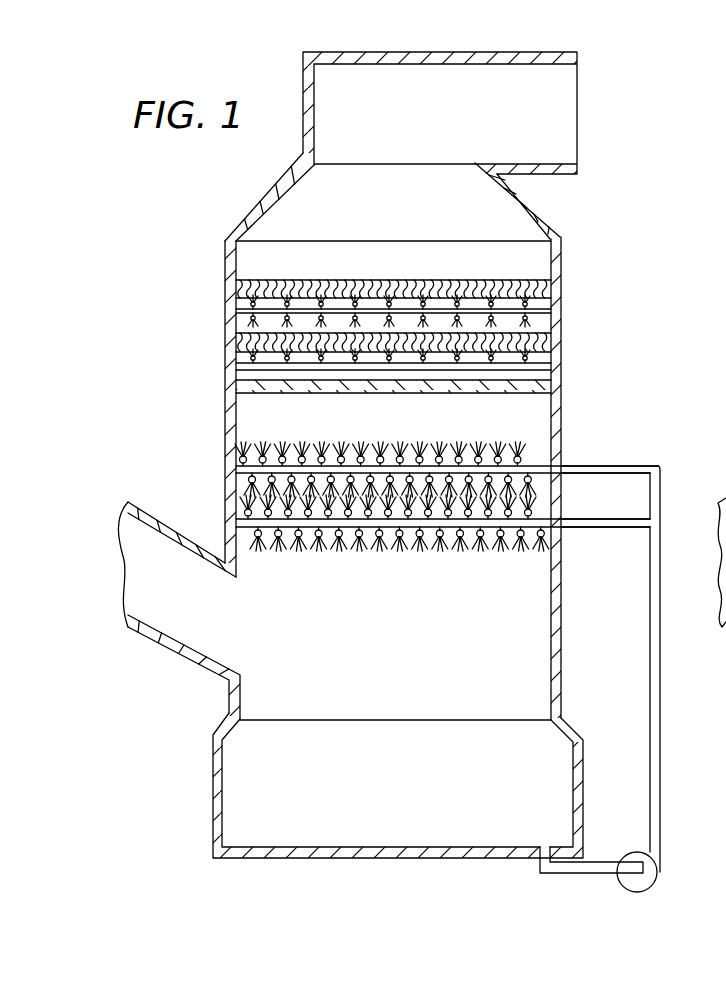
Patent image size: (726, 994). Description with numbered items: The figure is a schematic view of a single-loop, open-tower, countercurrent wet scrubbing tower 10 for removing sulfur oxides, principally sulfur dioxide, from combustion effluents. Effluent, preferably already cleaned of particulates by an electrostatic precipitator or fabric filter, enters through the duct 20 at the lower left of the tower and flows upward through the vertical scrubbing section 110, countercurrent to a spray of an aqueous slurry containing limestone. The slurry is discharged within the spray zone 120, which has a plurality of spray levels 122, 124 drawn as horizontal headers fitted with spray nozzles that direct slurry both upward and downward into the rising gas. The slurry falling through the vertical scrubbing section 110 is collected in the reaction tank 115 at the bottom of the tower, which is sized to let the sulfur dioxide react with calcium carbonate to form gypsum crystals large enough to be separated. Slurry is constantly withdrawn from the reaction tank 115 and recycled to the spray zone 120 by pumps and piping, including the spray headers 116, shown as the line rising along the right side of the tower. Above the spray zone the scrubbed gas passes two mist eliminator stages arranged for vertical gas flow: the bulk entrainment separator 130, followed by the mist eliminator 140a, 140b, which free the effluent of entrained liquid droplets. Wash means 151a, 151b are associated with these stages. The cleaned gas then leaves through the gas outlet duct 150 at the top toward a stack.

The wet scrubbing tower 10 is at (206, 364).
The duct 20 is at (207, 609).
The vertical scrubbing section 110 is at (670, 458).
The reaction tank 115 is at (416, 794).
The spray headers 116 is at (617, 465).
The spray zone 120 is at (216, 541).
The spray level 122 is at (332, 468).
The spray level 124 is at (352, 522).
The bulk entrainment separator 130 is at (520, 382).
The mist eliminator 140a is at (543, 343).
The mist eliminator 140b is at (541, 279).
The wash means 151a is at (553, 372).
The wash means 151b is at (548, 312).
The gas outlet duct 150 is at (537, 124).